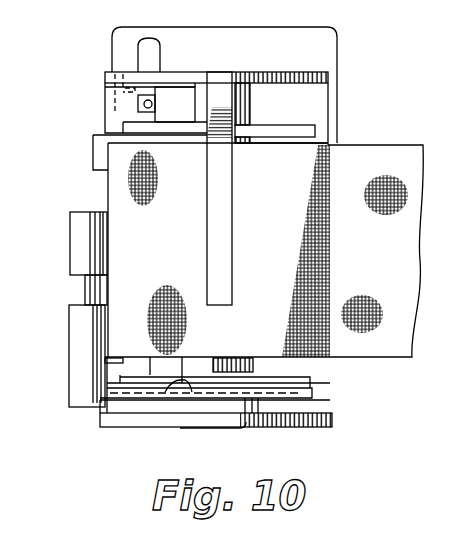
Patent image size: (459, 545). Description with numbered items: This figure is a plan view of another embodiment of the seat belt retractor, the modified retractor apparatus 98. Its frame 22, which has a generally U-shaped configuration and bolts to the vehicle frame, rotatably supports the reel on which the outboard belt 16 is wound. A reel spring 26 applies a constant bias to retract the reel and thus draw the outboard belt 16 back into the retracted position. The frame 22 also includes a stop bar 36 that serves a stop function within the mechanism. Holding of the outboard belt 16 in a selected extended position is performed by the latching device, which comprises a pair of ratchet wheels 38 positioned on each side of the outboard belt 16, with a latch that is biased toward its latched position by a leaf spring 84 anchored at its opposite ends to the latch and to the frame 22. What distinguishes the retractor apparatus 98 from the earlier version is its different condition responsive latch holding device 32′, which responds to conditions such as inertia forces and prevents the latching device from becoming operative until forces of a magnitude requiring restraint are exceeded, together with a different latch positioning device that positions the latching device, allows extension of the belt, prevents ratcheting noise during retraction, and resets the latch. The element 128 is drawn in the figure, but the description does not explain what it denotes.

The reel spring 26 is at (333, 32).
The frame 22 is at (333, 74).
The retractor apparatus 98 is at (343, 107).
The stop bar 36 is at (232, 212).
The ratchet wheels 38 is at (316, 136).
The leaf spring 84 is at (115, 100).
The outboard belt 16 is at (378, 148).
The condition responsive latch holding device 32′ is at (69, 224).
The lower assembly 128 is at (191, 405).